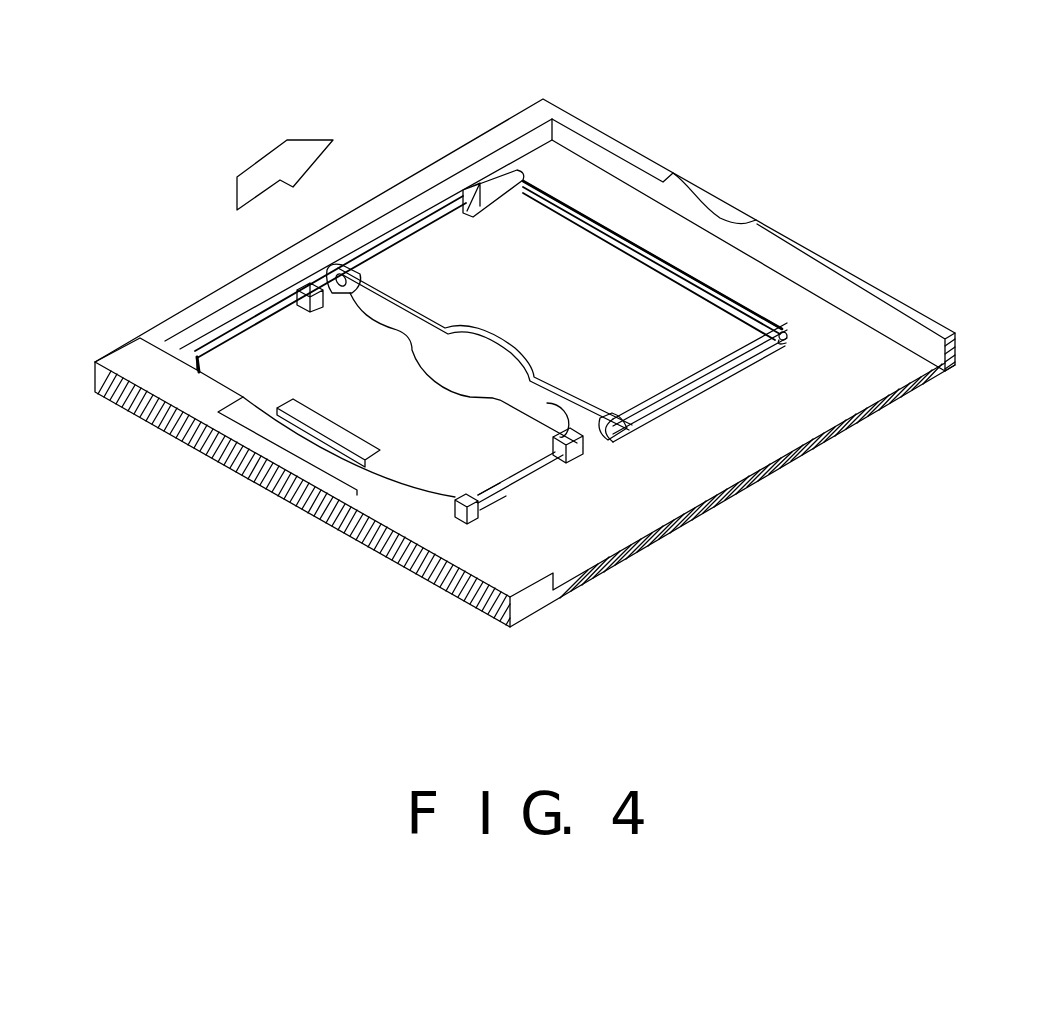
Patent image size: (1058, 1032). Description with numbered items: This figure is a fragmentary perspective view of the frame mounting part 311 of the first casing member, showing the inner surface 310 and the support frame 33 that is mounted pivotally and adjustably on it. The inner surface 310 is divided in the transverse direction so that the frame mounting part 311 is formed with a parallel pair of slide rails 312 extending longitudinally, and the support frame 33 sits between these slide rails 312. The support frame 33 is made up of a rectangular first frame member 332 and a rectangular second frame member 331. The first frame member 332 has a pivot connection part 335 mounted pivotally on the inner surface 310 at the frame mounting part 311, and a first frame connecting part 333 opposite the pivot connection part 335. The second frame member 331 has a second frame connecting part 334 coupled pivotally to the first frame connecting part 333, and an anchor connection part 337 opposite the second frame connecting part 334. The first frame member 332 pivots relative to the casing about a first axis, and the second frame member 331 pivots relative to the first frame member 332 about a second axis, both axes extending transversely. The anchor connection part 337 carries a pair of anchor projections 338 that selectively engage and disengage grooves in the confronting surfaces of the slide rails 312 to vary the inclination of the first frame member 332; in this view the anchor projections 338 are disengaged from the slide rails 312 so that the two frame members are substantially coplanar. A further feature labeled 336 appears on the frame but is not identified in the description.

The inner surface 310 is at (582, 185).
The frame mounting part 311 is at (190, 352).
The slide rails 312 is at (400, 205).
The support frame 33 is at (450, 250).
The second frame member 331 is at (693, 380).
The first frame member 332 is at (508, 435).
The first frame connecting part 333 is at (416, 349).
The second frame connecting part 334 is at (615, 416).
The pivot connection part 335 is at (442, 498).
The elastic tab 336 is at (350, 408).
The anchor connection part 337 is at (694, 297).
The anchor projections 338 is at (785, 341).